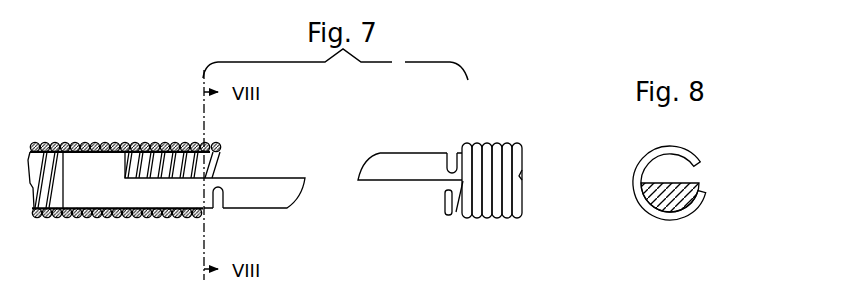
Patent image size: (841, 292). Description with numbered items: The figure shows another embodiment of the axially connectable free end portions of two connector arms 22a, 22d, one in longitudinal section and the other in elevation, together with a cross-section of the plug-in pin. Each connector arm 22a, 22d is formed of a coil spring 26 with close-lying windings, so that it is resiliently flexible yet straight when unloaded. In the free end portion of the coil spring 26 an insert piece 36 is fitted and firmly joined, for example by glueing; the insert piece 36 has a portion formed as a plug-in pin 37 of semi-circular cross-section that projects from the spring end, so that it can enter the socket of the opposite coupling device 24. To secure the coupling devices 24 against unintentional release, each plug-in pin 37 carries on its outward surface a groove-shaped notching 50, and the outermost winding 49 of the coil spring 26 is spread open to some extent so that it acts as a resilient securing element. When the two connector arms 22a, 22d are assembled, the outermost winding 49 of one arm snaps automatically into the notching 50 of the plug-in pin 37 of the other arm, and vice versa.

In FIG. 7, the connector arm 22a is at (77, 138).
In FIG. 7, the connector arm 22d is at (483, 100).
In FIG. 7, the coupling device 24 is at (354, 160).
In FIG. 7, the coil spring 26 is at (50, 219).
In FIG. 7, the insert piece 36 is at (98, 195).
In FIG. 7, the plug-in pin 37 is at (278, 196).
In FIG. 8, the plug-in pin 37 is at (677, 196).
In FIG. 7, the outermost winding 49 is at (219, 142).
In FIG. 8, the outermost winding 49 is at (688, 152).
In FIG. 7, the groove-shaped notching 50 is at (218, 209).